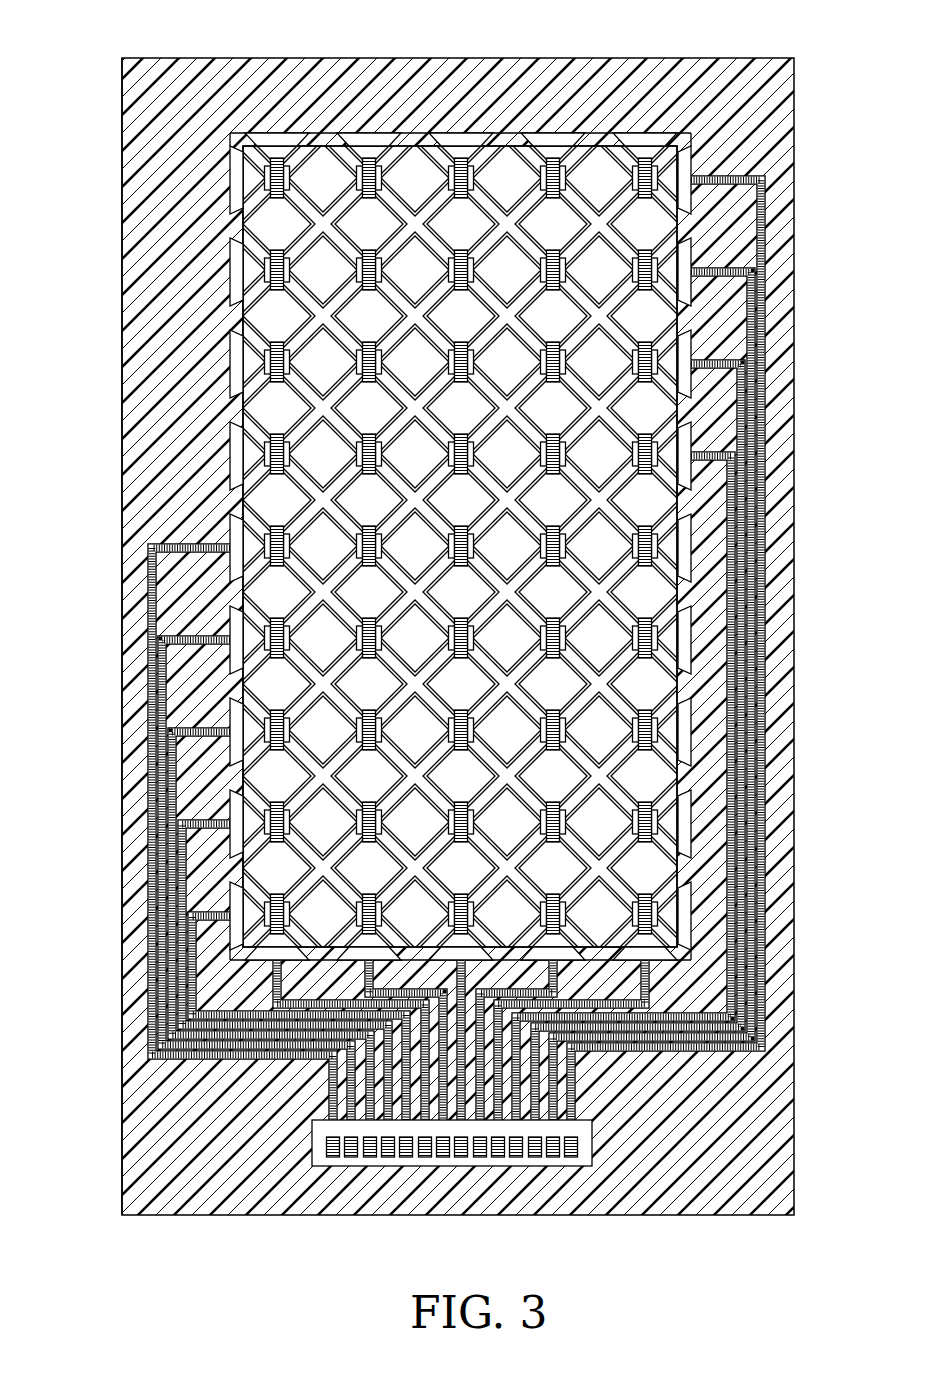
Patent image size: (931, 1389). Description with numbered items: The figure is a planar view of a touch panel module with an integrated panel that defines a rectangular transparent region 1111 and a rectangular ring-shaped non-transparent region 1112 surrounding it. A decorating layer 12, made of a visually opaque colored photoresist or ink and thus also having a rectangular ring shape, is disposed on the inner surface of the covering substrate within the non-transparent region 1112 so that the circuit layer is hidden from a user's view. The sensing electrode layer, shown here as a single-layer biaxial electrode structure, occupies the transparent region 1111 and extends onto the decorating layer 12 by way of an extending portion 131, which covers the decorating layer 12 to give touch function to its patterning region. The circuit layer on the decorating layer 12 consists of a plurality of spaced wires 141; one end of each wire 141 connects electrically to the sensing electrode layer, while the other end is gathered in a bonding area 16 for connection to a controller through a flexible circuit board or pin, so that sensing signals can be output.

The decorating layer 12 is at (170, 396).
The transparent region 1111 is at (530, 135).
The non-transparent region 1112 is at (162, 158).
The extending portion 131 is at (230, 262).
The wires 141 is at (122, 573).
The bonding area 16 is at (325, 1166).